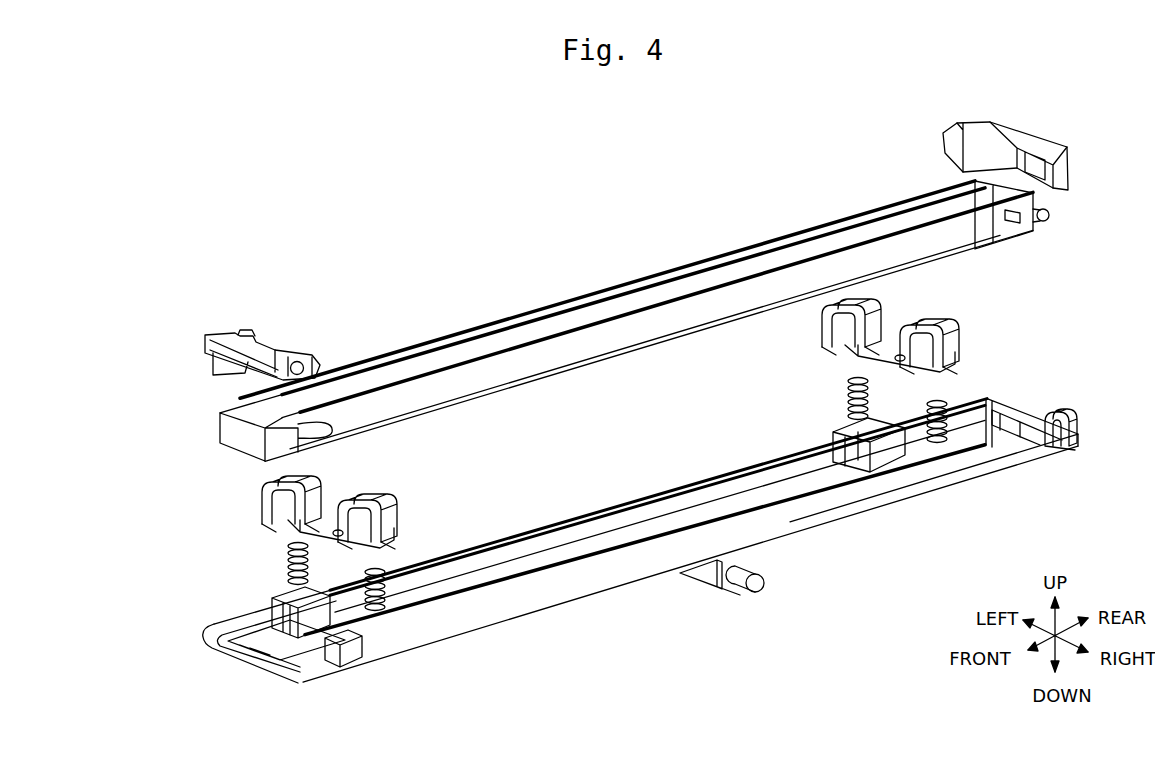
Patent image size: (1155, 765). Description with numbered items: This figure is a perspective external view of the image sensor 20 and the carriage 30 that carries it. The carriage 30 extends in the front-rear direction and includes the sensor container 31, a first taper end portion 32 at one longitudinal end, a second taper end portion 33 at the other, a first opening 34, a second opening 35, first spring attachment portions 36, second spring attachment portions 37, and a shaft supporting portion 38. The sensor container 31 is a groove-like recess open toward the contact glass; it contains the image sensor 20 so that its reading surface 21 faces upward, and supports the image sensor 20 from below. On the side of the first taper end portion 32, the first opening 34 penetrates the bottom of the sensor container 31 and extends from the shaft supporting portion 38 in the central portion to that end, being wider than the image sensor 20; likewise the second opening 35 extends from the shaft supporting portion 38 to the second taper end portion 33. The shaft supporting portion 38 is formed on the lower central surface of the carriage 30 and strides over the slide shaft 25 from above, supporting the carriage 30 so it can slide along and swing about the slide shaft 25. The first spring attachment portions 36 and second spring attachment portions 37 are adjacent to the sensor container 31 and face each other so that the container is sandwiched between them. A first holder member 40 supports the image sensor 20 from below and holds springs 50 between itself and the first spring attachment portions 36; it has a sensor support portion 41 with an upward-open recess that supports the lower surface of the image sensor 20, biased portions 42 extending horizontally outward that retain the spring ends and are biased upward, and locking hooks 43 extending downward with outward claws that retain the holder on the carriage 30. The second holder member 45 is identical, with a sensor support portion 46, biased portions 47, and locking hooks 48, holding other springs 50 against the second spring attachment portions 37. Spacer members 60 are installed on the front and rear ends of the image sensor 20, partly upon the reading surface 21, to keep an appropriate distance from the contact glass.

The image sensor 20 is at (945, 243).
The reading surface 21 is at (598, 322).
The slide shaft 25 is at (757, 586).
The carriage 30 is at (620, 537).
The sensor container 31 is at (620, 518).
The first taper end portion 32 is at (205, 643).
The second taper end portion 33 is at (1060, 452).
The first opening 34 is at (290, 650).
The second opening 35 is at (1005, 425).
The first spring attachment portions 36 is at (290, 604).
The second spring attachment portions 37 is at (857, 424).
The shaft supporting portion 38 is at (738, 592).
The first holder member 40 is at (333, 516).
The sensor support portion 41 is at (330, 540).
The biased portions 42 is at (270, 475).
The locking hooks 43 is at (277, 502).
The second holder member 45 is at (896, 340).
The sensor support portion 46 is at (889, 368).
The biased portions 47 is at (828, 313).
The locking hooks 48 is at (838, 335).
The springs 50 is at (845, 382).
The spacer members 60 is at (1017, 143).